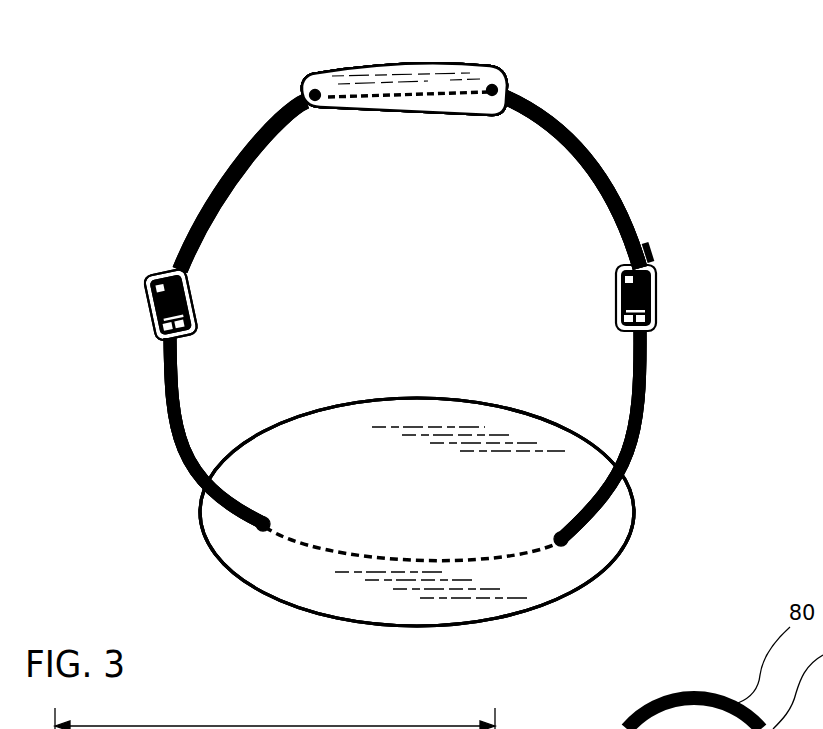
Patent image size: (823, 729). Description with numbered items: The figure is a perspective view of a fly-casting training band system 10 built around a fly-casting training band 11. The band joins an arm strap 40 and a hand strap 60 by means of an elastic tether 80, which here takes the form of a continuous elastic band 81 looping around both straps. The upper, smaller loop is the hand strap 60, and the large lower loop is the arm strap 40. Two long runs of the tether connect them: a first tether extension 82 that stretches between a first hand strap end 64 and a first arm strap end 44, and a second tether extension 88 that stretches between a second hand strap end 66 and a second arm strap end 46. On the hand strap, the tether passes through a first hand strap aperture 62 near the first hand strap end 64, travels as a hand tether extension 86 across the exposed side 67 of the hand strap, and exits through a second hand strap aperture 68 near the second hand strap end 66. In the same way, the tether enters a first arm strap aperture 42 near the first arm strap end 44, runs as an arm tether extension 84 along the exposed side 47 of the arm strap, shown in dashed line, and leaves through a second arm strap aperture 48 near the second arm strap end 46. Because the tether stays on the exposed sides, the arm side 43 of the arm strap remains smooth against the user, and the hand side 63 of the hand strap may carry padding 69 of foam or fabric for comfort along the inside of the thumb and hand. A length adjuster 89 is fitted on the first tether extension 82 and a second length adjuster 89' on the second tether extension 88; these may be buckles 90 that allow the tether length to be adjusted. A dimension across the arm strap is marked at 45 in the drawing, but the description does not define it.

The fly-casting training band system 10 is at (152, 178).
The fly-casting training band 11 is at (648, 350).
The arm strap 40 is at (275, 602).
The first arm strap aperture 42 is at (590, 560).
The arm side 43 is at (464, 588).
The first arm strap end 44 is at (640, 498).
The rim width 45 is at (275, 718).
The second arm strap end 46 is at (198, 505).
The exposed side 47 is at (548, 604).
The second arm strap aperture 48 is at (262, 530).
The hand strap 60 is at (383, 86).
The first hand strap aperture 62 is at (498, 90).
The hand side 63 is at (353, 105).
The first hand strap end 64 is at (509, 86).
The second hand strap end 66 is at (306, 98).
The exposed side 67 is at (498, 112).
The second hand strap aperture 68 is at (297, 98).
The padding 69 is at (450, 84).
The elastic tether 80 is at (163, 387).
The elastic band 81 is at (612, 170).
The first tether extension 82 is at (630, 220).
The arm tether extension 84 is at (386, 556).
The hand tether extension 86 is at (455, 105).
The second tether extension 88 is at (198, 213).
The length adjuster 89 is at (127, 304).
The second length adjuster 89' is at (677, 275).
The buckles 90 is at (150, 318).